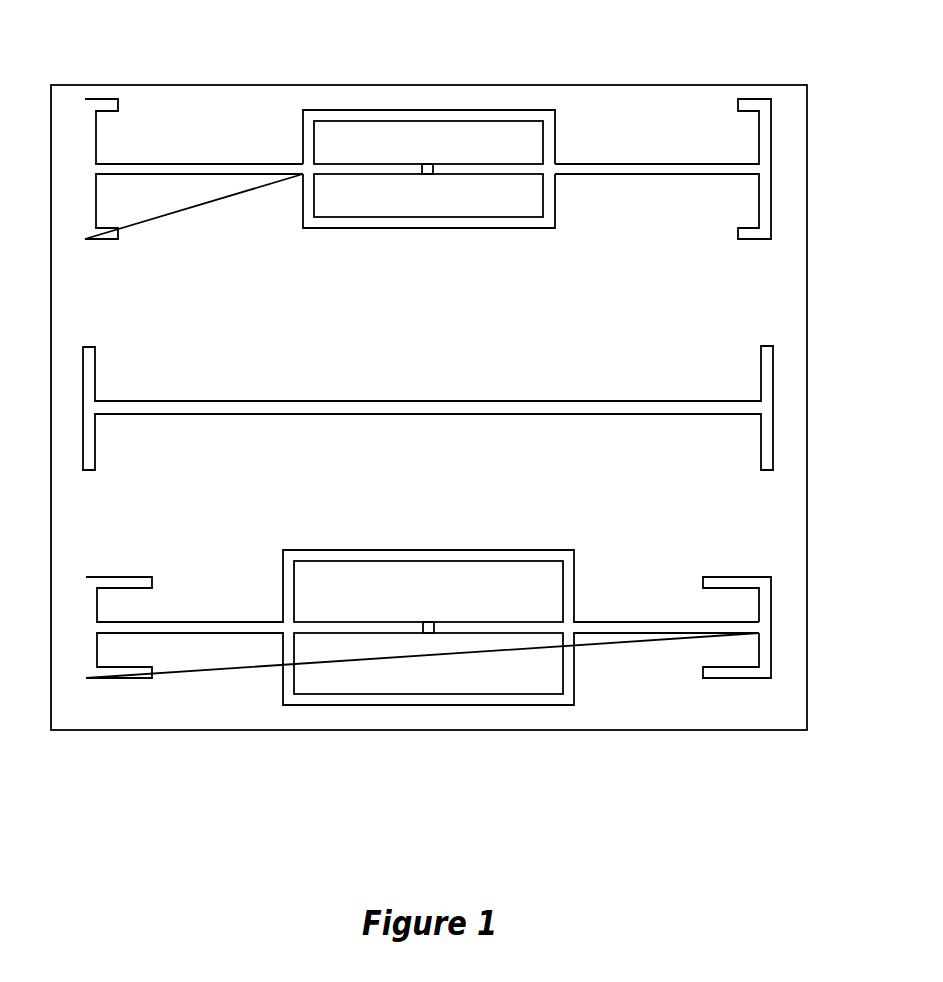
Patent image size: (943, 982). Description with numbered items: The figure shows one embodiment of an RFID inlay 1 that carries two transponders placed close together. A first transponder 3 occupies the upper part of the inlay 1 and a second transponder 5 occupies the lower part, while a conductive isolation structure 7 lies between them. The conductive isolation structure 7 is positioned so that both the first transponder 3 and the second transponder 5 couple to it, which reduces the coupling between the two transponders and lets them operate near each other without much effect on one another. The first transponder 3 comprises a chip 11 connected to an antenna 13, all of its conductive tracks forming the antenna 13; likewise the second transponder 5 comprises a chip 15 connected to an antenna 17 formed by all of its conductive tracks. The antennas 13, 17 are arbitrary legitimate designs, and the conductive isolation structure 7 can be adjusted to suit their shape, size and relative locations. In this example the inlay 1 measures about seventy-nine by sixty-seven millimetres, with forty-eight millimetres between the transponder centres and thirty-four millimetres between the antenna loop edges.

The inlay 1 is at (824, 73).
The first transponder 3 is at (42, 100).
The second transponder 5 is at (41, 577).
The conductive isolation structure 7 is at (42, 345).
The chip 11 is at (432, 168).
The antenna 13 is at (506, 117).
The chip 15 is at (433, 636).
The antenna 17 is at (753, 673).